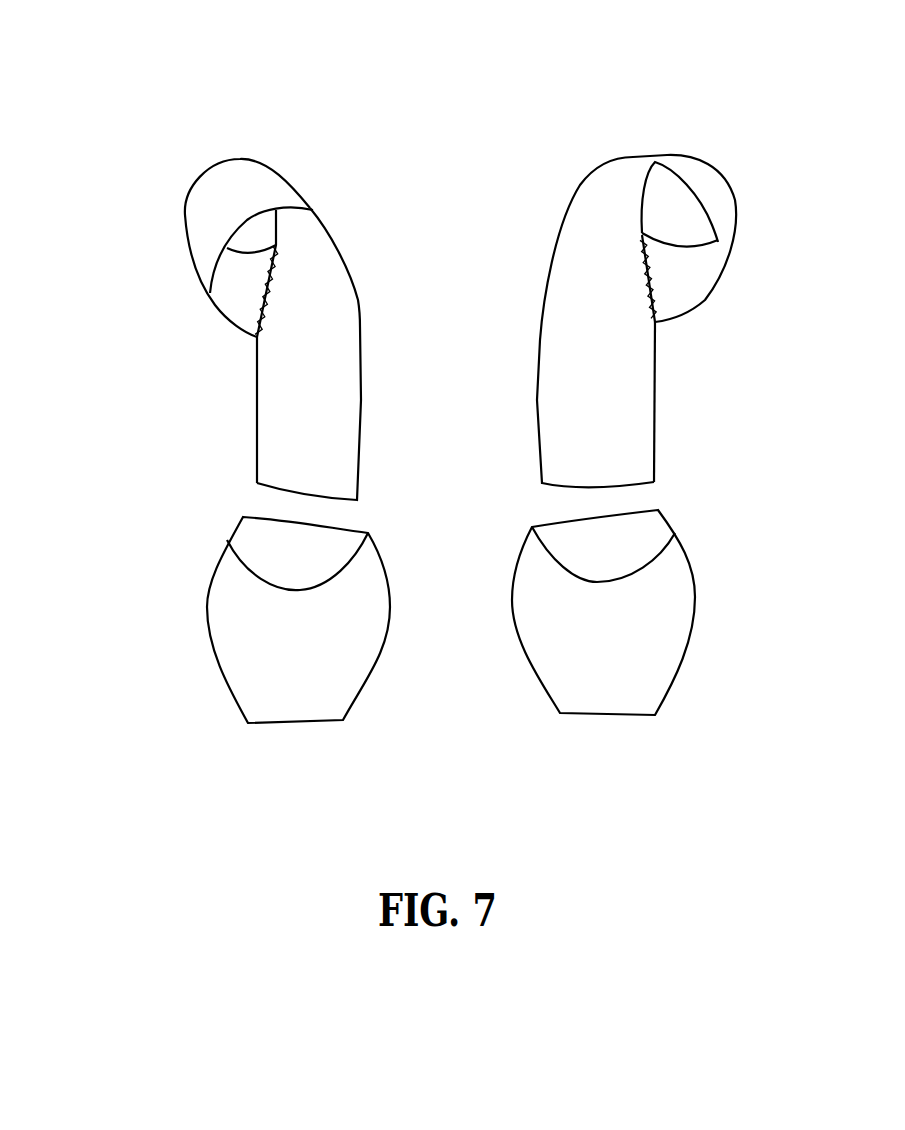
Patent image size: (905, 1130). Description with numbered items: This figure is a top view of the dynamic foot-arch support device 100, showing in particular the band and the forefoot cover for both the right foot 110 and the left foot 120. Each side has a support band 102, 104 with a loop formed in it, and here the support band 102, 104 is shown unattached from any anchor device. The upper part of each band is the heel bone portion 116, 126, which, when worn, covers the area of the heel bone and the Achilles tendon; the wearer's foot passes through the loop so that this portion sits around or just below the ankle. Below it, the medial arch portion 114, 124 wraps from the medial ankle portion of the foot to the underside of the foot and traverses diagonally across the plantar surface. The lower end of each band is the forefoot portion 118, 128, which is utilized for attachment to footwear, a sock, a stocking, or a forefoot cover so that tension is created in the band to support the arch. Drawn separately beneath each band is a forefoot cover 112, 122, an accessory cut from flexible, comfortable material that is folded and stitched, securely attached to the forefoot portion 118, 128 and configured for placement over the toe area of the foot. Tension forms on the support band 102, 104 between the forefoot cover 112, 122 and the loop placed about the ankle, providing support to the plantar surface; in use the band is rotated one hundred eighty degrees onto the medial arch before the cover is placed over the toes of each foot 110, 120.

The dynamic foot-arch support device 100 is at (461, 67).
The right foot 110 is at (114, 489).
The left foot 120 is at (759, 489).
The support band 102 is at (267, 374).
The support band 104 is at (641, 364).
The forefoot cover 112 is at (247, 702).
The forefoot cover 122 is at (647, 702).
The medial arch portion 114 is at (352, 292).
The heel bone portion 116 is at (220, 177).
The forefoot portion 118 is at (355, 460).
The medial arch portion 124 is at (552, 283).
The heel bone portion 126 is at (708, 167).
The forefoot portion 128 is at (552, 465).